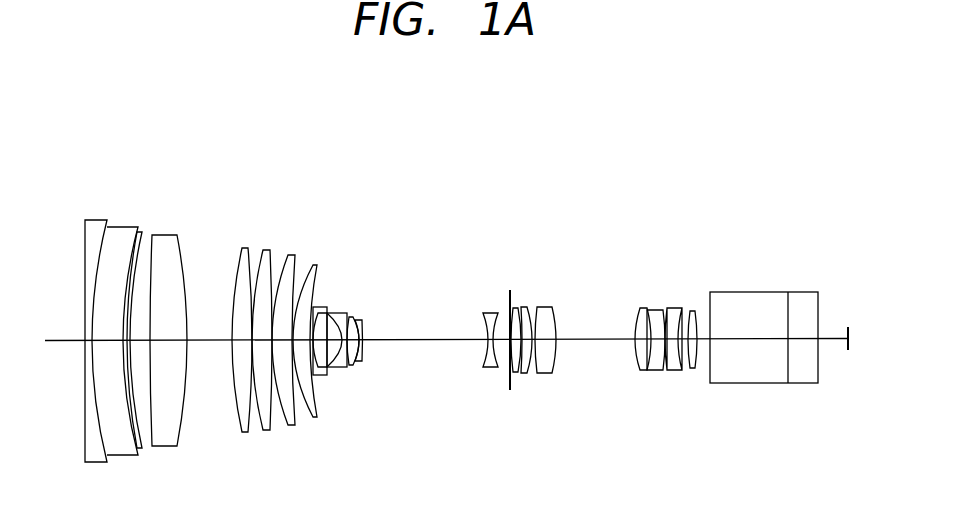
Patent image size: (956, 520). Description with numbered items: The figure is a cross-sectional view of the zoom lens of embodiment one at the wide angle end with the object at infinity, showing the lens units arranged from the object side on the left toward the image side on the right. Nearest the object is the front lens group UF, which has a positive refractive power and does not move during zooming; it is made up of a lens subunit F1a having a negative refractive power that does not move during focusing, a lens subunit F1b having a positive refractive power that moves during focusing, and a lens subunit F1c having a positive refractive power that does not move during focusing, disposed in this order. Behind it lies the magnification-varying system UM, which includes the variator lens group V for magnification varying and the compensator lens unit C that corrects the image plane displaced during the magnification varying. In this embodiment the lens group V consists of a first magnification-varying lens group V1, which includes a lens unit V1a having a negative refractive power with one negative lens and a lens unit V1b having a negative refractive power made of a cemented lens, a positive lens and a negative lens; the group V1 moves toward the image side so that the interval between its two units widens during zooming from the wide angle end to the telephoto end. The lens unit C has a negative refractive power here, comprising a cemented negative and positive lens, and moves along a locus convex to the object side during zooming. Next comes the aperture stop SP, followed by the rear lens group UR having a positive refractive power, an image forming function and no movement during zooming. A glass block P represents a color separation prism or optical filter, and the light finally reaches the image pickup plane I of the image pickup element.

The front lens group UF is at (320, 120).
The lens subunit F1a is at (80, 212).
The lens subunit F1b is at (193, 212).
The lens subunit F1c is at (322, 242).
The magnification-varying system UM is at (325, 120).
The lens group V is at (328, 175).
The first magnification-varying lens group V1 is at (328, 220).
The lens unit V1a is at (321, 304).
The lens unit V1b is at (330, 305).
The lens unit (compensator) C is at (473, 302).
The aperture stop SP is at (510, 290).
The rear lens group UR is at (512, 299).
The color separation prism P is at (818, 284).
The image pickup plane I is at (845, 355).